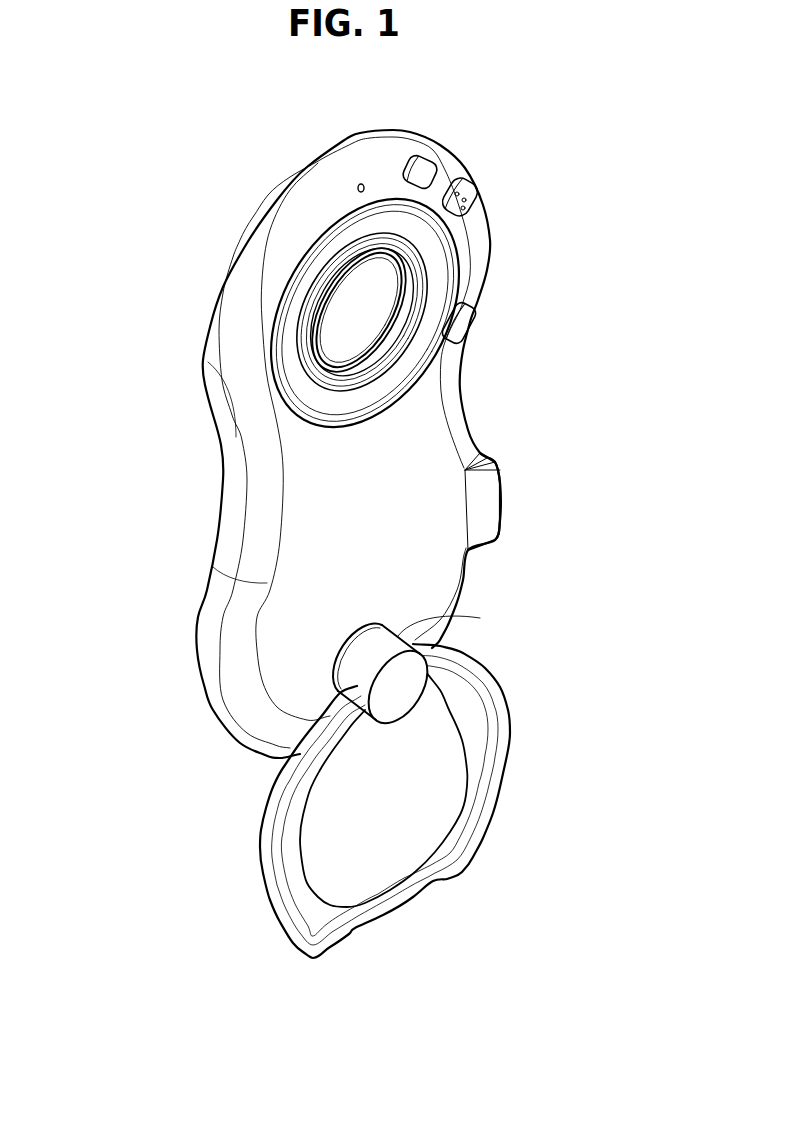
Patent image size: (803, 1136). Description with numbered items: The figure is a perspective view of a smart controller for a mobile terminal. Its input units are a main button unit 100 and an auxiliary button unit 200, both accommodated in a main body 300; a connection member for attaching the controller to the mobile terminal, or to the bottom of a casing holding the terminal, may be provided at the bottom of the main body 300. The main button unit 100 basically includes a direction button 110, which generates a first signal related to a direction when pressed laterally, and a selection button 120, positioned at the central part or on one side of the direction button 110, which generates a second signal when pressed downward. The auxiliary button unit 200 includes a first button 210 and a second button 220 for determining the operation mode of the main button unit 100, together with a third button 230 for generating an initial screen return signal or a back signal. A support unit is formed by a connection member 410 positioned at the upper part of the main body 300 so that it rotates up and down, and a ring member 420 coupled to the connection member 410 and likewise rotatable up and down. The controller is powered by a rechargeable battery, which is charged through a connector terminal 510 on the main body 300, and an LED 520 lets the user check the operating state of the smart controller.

The main button unit 100 is at (275, 312).
The direction button 110 is at (335, 337).
The selection button 120 is at (320, 333).
The auxiliary button unit 200 is at (521, 234).
The first button 210 is at (462, 195).
The second button 220 is at (506, 322).
The third button 230 is at (425, 168).
The main body 300 is at (257, 474).
The connection member 410 is at (405, 640).
The ring member 420 is at (497, 752).
The connector terminal 510 is at (485, 497).
The LED 520 is at (362, 185).